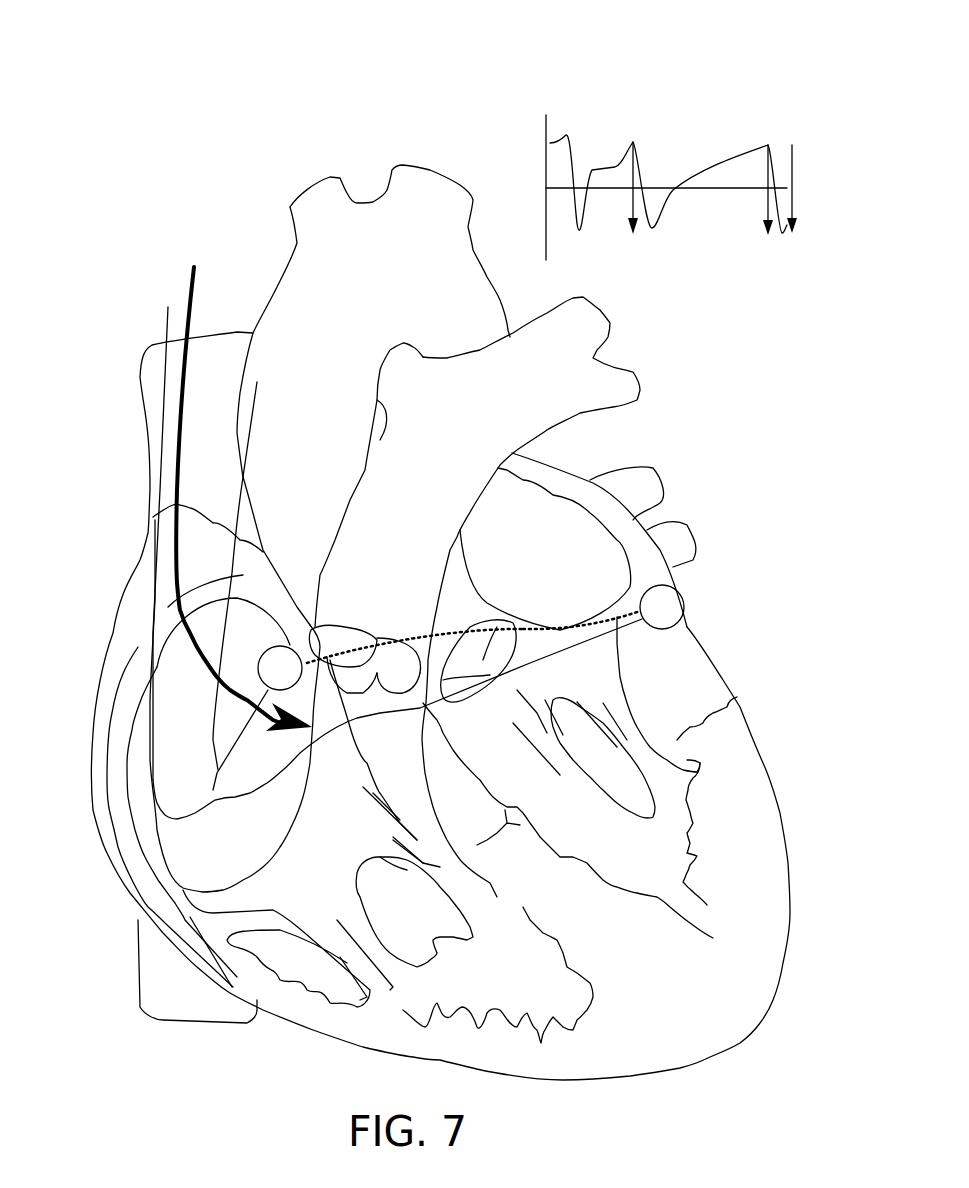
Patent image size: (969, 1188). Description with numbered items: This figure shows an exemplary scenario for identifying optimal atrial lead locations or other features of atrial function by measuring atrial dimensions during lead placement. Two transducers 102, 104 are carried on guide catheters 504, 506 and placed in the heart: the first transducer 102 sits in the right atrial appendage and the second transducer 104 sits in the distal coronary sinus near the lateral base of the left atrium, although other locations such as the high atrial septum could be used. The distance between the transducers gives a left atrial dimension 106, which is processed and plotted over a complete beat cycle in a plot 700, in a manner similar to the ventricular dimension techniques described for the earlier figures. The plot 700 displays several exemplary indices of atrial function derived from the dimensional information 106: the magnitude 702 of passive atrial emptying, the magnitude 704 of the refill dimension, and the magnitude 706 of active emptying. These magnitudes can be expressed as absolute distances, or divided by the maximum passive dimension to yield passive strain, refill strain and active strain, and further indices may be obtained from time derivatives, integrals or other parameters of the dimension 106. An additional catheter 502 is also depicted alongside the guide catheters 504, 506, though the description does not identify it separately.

The plot 700 is at (766, 70).
The left atrial dimension 106 is at (546, 130).
The magnitude of passive atrial emptying 702 is at (631, 198).
The magnitude of refill dimension 704 is at (766, 192).
The magnitude of active emptying 706 is at (796, 190).
The transducer 102 is at (278, 645).
The transducer 104 is at (685, 603).
The delivery catheter 502 is at (170, 290).
The guide catheter 504 is at (130, 556).
The guide catheter 506 is at (232, 470).